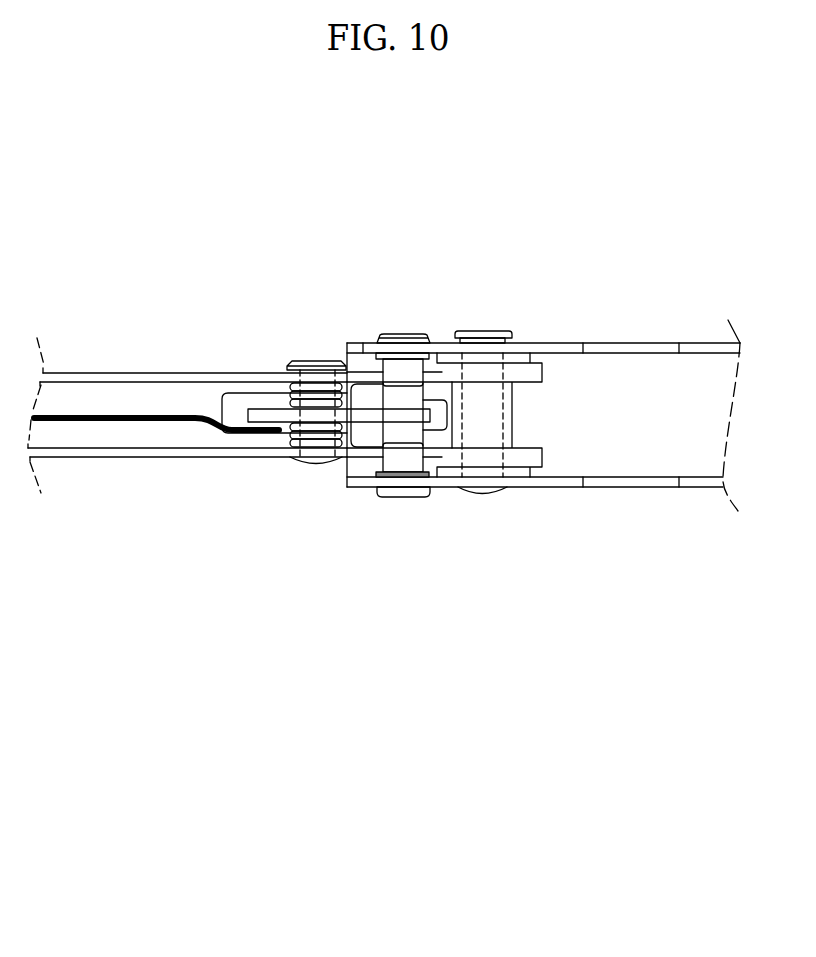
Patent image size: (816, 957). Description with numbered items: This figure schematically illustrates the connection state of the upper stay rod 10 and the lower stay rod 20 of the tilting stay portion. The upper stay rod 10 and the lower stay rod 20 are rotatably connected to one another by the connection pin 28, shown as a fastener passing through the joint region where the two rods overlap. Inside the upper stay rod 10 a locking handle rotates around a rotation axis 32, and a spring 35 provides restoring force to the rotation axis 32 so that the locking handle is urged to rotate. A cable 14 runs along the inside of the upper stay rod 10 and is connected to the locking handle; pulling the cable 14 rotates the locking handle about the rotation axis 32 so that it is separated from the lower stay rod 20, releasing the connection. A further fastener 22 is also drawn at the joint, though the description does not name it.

The upper stay rod 10 is at (150, 376).
The cable 14 is at (135, 423).
The lower stay rod 20 is at (633, 445).
The fastening screw 22 is at (402, 334).
The connection pin 28 is at (486, 333).
The rotation axis 32 is at (313, 358).
The spring 35 is at (313, 437).